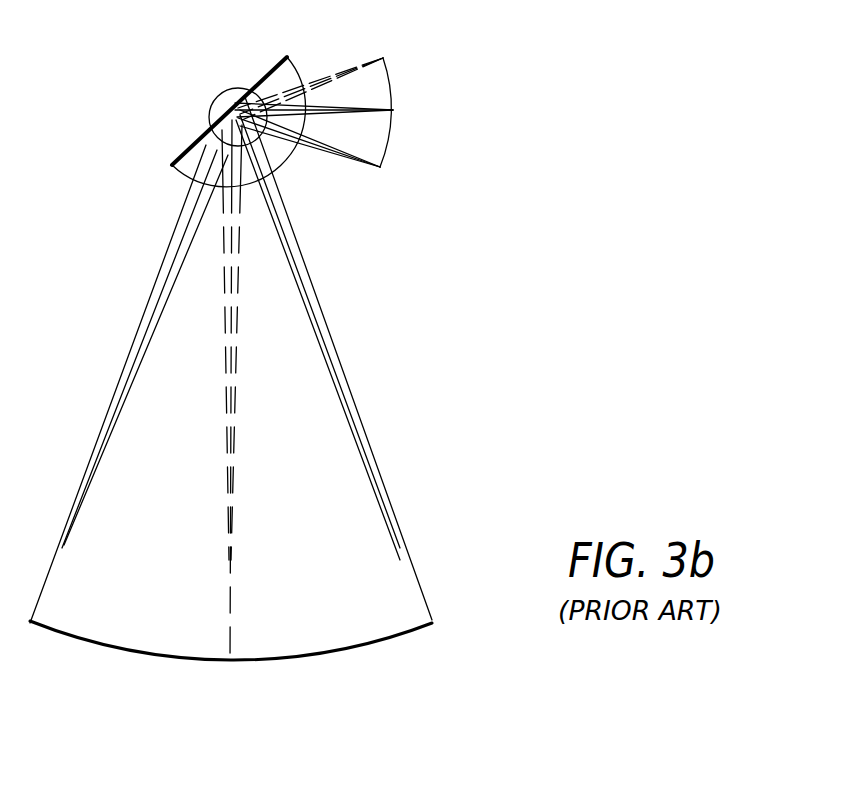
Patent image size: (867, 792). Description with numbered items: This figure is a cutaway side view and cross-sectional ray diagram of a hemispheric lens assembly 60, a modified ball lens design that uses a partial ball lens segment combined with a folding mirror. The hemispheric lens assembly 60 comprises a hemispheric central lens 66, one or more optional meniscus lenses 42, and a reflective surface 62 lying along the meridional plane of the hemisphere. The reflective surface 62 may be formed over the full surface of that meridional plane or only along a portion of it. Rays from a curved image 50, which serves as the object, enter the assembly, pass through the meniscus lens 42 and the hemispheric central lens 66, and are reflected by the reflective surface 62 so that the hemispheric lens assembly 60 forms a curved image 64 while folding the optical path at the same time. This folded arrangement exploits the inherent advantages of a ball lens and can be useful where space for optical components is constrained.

The meniscus lens 42 is at (289, 164).
The curved image 50 is at (393, 90).
The hemispheric lens assembly 60 is at (248, 93).
The reflective surface 62 is at (197, 140).
The curved image 64 is at (104, 644).
The hemispheric central lens 66 is at (287, 59).